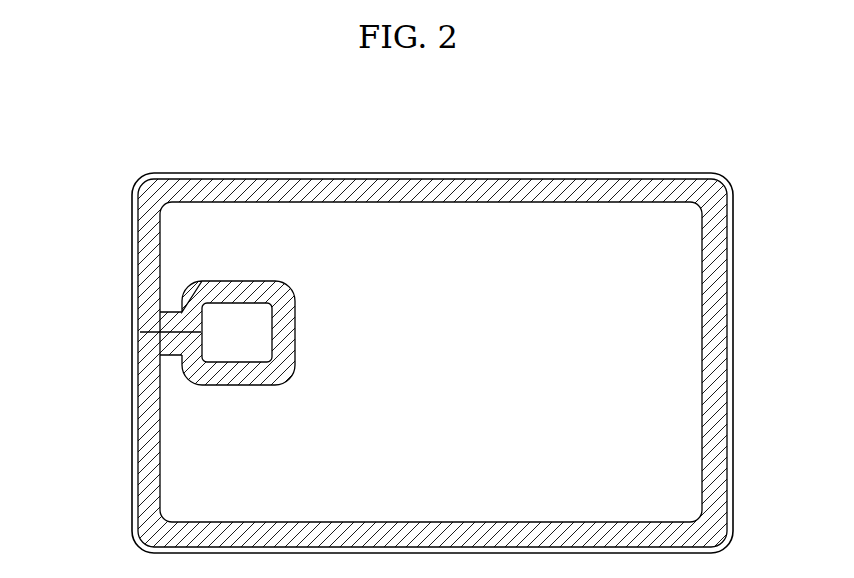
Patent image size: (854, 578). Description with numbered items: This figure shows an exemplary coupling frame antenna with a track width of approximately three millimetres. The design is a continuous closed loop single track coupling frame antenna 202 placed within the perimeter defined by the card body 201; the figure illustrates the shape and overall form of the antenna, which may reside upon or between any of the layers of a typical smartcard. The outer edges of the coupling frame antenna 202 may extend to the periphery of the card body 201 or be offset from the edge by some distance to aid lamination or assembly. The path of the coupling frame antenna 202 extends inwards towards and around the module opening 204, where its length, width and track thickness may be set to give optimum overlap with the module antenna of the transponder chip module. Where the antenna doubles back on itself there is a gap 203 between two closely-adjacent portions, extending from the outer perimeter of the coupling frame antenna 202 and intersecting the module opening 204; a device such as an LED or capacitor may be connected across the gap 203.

The card body 201 is at (612, 235).
The coupling frame antenna 202 is at (257, 193).
The gap 203 is at (163, 333).
The module opening 204 is at (245, 348).